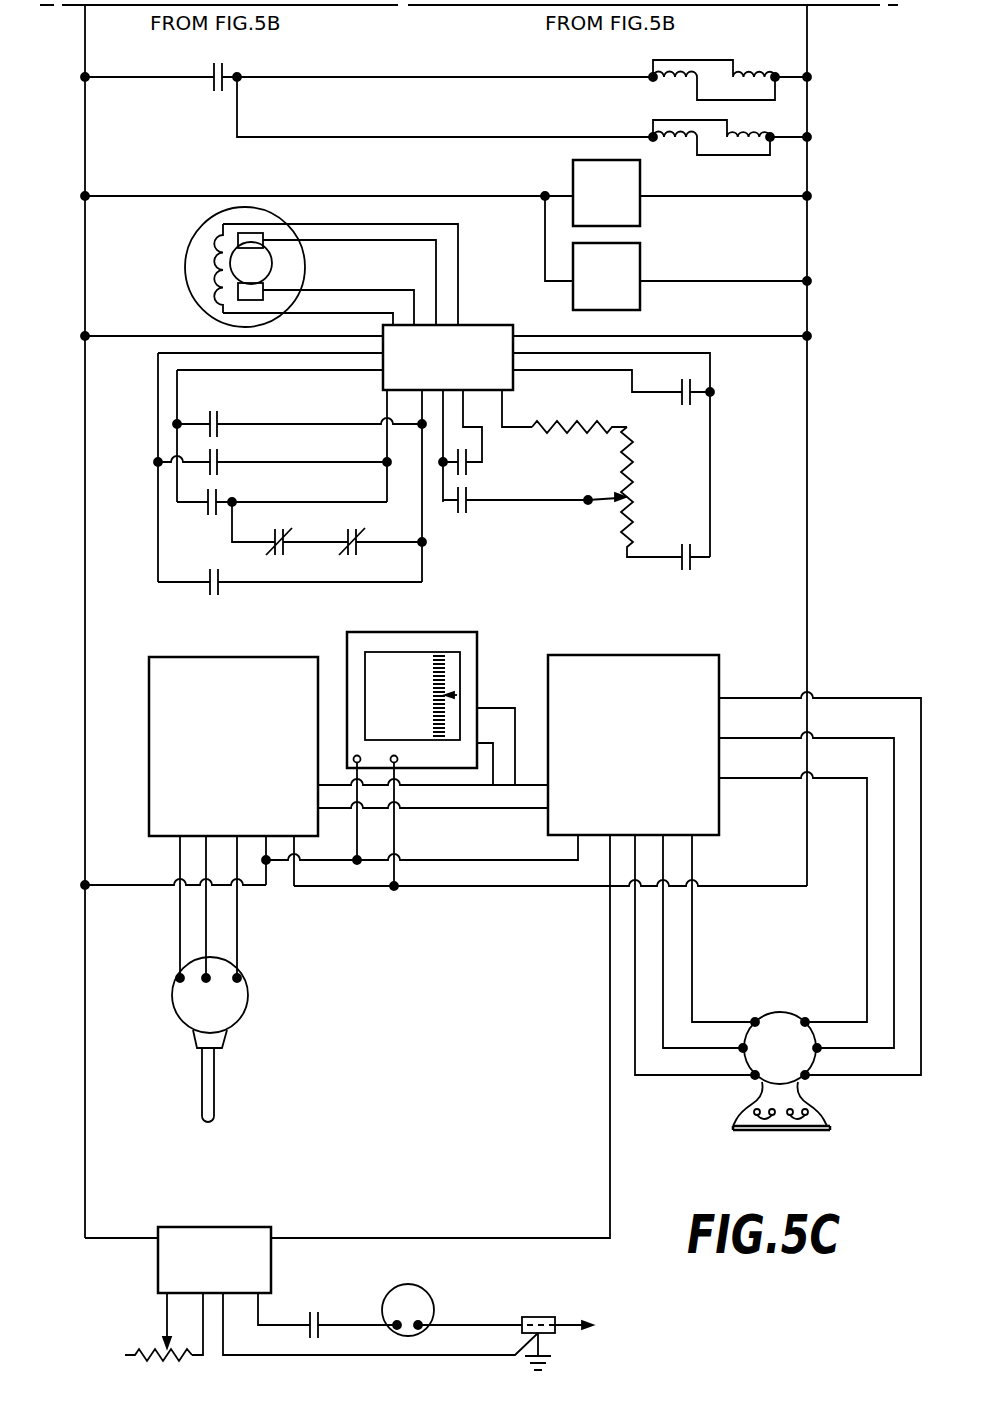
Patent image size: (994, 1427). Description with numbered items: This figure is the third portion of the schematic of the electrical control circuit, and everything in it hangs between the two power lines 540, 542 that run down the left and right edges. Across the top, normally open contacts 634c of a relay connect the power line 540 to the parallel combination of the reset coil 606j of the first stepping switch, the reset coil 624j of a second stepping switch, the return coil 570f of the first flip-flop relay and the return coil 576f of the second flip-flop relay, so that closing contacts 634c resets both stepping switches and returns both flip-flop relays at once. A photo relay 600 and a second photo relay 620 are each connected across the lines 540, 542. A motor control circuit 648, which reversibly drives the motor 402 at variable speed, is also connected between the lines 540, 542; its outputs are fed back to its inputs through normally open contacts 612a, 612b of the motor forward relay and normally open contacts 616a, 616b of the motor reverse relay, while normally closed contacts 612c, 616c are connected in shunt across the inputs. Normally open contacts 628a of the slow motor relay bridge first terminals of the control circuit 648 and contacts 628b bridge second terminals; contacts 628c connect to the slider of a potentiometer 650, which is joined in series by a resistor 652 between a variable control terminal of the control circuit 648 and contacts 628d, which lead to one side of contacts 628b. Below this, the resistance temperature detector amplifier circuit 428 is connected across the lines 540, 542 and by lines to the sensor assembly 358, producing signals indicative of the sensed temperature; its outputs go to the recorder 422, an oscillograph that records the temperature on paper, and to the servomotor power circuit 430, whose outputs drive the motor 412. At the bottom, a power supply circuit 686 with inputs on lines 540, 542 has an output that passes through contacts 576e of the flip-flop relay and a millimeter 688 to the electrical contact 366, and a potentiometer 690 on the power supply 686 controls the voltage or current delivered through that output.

The power line 540 is at (85, 165).
The power line 542 is at (807, 167).
The normally open contacts of relay 634 634c is at (235, 78).
The reset coil of stepping switch 606 606j is at (664, 79).
The reset coil of stepping switch 624 624j is at (769, 72).
The return coil of first flip-flop relay 570f is at (767, 128).
The return coil of second flip-flop relay 576f is at (678, 140).
The photo relay 600 is at (639, 216).
The second photo relay 620 is at (640, 258).
The motor 402 is at (187, 302).
The motor control circuit 648 is at (487, 334).
The normally open contacts of motor forward relay 612 612a is at (215, 414).
The normally open contacts of motor forward relay 612 612b is at (221, 457).
The normally closed contacts of motor forward relay 612 612c is at (292, 515).
The normally open contacts of motor reverse relay 616 616a is at (221, 497).
The normally open contacts of motor reverse relay 616 616b is at (221, 577).
The normally closed contacts of motor reverse relay 616 616c is at (366, 515).
The resistor 652 is at (585, 398).
The potentiometer 650 is at (628, 481).
The normally open contacts of slow motor relay 628 628a is at (471, 466).
The normally open contacts of slow motor relay 628 628b is at (681, 402).
The normally open contacts of slow motor relay 628 628c is at (471, 513).
The normally open contacts of slow motor relay 628 628d is at (683, 564).
The resistance temperature detector amplifier circuit 428 is at (227, 658).
The recorder 422 is at (430, 634).
The servomotor power circuit 430 is at (610, 659).
The sensor assembly 358 is at (246, 1009).
The motor 412 is at (782, 1012).
The power supply circuit 686 is at (254, 1227).
The potentiometer 690 is at (163, 1340).
The contacts of flip-flop relay 576e is at (326, 1316).
The millimeter 688 is at (432, 1301).
The electrical contact 366 is at (570, 1322).